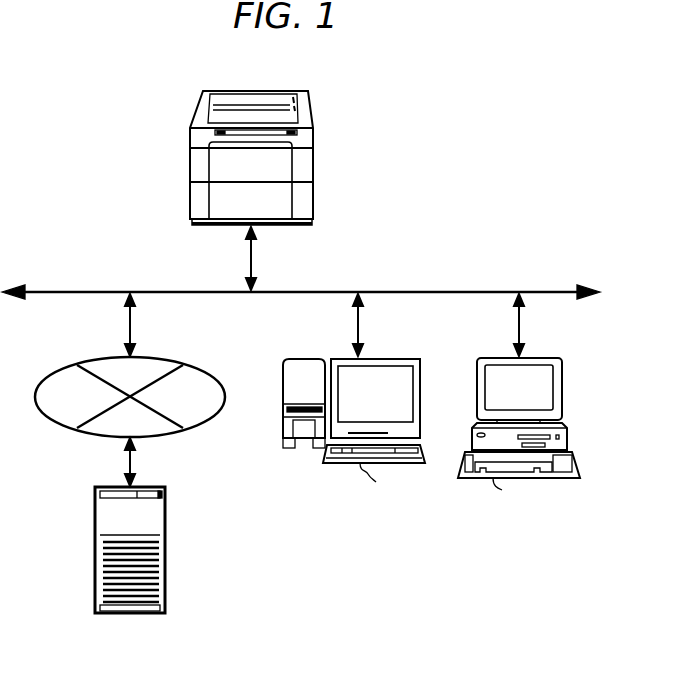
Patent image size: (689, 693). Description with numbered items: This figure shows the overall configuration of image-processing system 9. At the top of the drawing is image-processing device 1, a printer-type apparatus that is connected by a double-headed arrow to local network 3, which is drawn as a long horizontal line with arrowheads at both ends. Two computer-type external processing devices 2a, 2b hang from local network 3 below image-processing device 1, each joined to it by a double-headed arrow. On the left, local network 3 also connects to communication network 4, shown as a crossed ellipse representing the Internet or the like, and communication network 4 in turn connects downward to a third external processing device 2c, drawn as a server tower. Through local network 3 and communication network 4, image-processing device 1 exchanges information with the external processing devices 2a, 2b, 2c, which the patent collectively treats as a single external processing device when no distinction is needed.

The image-processing device 1 is at (308, 175).
The external processing device 2a is at (363, 463).
The external processing device 2b is at (492, 480).
The external processing device 2c is at (165, 512).
The local network 3 is at (460, 292).
The communication network 4 is at (195, 367).
The image-processing system 9 is at (527, 157).